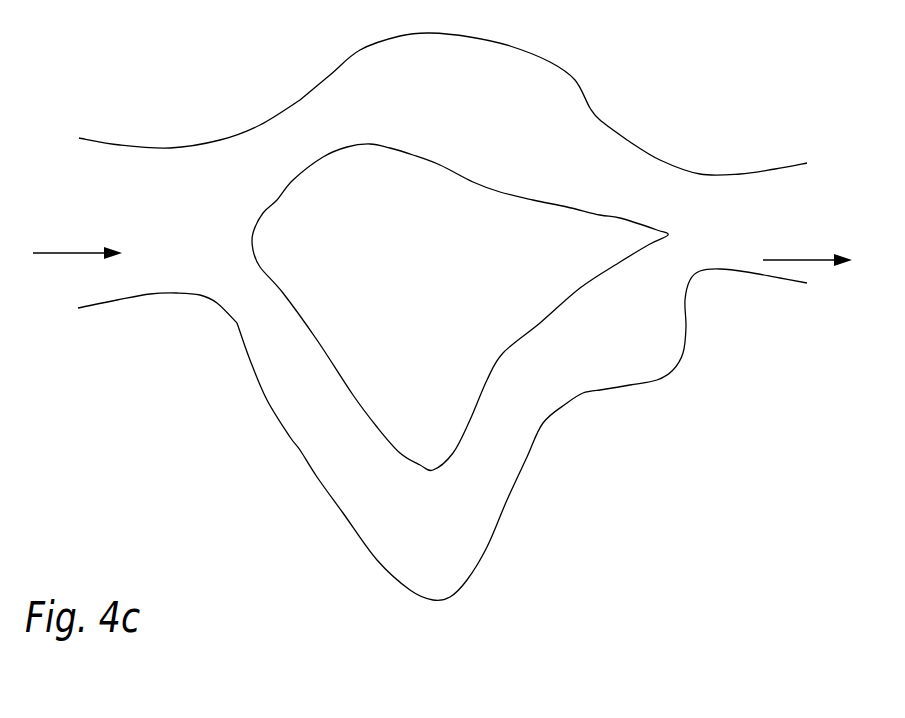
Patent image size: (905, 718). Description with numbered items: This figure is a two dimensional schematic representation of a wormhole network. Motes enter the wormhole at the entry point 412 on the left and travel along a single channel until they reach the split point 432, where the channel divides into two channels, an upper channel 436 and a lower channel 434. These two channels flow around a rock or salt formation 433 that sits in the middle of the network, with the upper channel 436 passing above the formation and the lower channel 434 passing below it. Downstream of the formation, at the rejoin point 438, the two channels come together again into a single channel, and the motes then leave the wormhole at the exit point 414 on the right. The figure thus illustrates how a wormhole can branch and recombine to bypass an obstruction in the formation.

The channel entry point 412 is at (77, 231).
The channel exit point 414 is at (807, 237).
The channel split point 432 is at (189, 211).
The rock or salt formation 433 is at (460, 307).
The second split channel 434 is at (418, 462).
The first split channel 436 is at (463, 86).
The channel rejoin point 438 is at (703, 265).